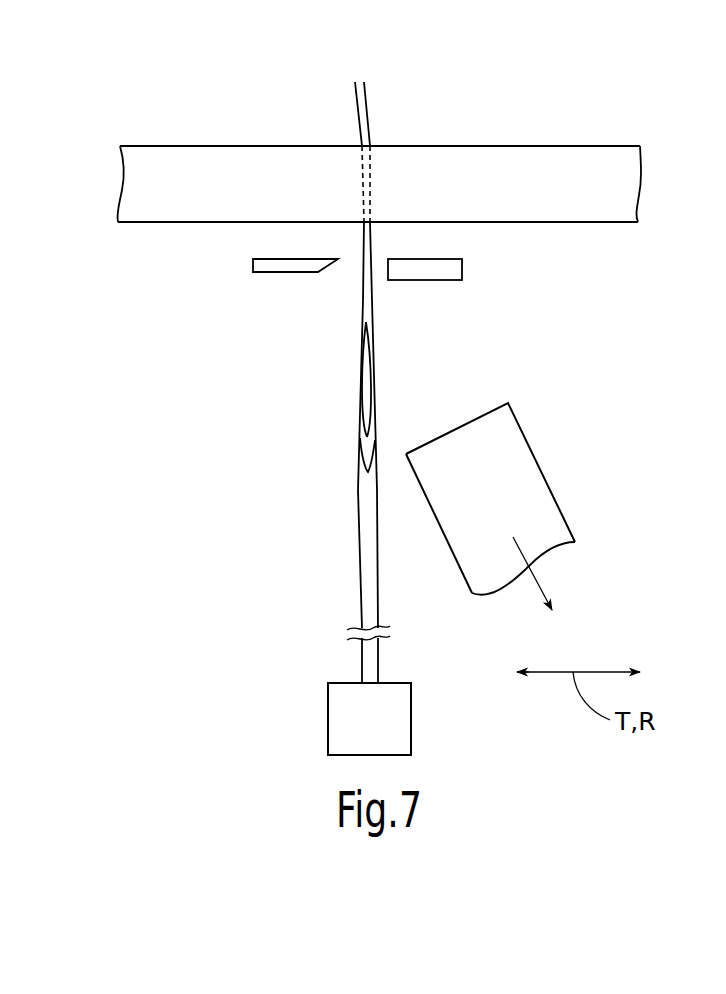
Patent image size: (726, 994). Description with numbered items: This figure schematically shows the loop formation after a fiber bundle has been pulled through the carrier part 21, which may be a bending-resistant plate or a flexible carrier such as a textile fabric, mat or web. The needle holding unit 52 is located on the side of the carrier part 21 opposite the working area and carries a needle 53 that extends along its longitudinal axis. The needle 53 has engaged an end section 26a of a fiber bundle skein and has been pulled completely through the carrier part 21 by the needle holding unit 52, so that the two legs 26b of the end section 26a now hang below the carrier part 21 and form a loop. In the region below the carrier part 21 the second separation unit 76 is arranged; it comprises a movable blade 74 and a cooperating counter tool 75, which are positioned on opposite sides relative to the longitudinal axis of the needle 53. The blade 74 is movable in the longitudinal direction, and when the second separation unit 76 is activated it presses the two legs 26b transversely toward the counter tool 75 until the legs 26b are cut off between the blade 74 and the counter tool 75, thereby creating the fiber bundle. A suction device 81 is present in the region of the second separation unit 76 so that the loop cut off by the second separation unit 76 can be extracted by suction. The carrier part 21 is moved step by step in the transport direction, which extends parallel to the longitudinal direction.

The carrier part 21 is at (527, 165).
The end section 26a is at (383, 132).
The legs 26b is at (364, 298).
The movable blade 74 is at (277, 266).
The counter tool 75 is at (463, 272).
The second separation unit 76 is at (180, 315).
The suction device 81 is at (511, 483).
The needle 53 is at (370, 530).
The needle holding unit 52 is at (340, 712).